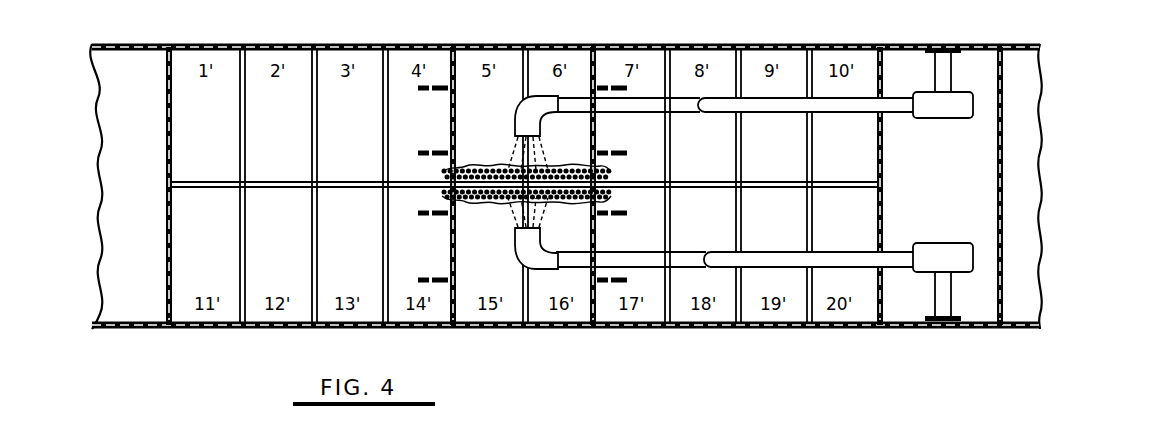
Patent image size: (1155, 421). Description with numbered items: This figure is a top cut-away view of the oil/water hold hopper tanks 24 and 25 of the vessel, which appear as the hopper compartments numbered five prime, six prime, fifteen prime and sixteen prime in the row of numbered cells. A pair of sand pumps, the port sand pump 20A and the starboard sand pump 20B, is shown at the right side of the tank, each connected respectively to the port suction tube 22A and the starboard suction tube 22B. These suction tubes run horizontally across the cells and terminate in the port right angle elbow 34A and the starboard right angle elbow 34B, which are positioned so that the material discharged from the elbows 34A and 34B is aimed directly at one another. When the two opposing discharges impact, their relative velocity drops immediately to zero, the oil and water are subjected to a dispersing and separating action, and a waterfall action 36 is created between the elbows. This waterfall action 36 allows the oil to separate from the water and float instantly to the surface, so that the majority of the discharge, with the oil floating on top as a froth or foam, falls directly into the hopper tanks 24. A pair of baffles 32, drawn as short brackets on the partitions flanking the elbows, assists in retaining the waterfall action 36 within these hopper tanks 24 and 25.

The oil/water hold hopper tank 24 is at (465, 72).
The oil/water hold hopper tank 25 is at (282, 333).
The port suction tube 22A is at (783, 98).
The starboard suction tube 22B is at (855, 250).
The port sand pump 20A is at (952, 118).
The starboard sand pump 20B is at (963, 252).
The baffle 32 is at (455, 150).
The port right angle elbow 34A is at (538, 97).
The starboard right angle elbow 34B is at (540, 268).
The waterfall action 36 is at (500, 118).